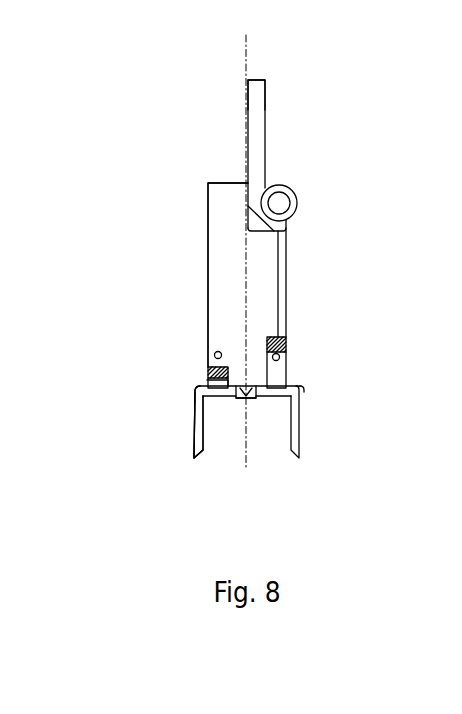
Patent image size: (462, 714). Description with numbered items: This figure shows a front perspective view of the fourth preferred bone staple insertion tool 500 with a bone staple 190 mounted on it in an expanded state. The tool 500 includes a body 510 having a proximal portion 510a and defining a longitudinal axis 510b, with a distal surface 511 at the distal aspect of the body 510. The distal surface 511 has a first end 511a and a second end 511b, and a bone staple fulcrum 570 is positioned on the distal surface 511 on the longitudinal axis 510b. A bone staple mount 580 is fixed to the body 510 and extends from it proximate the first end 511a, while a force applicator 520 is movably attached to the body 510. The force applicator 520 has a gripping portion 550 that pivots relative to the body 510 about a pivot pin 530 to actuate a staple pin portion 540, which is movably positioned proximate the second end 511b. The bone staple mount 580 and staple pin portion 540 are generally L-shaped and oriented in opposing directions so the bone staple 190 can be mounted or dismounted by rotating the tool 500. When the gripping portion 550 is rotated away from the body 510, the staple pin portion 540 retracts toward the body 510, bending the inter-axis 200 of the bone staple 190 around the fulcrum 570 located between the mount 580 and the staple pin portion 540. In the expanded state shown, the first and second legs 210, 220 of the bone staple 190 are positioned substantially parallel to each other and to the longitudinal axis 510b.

The bone staple insertion instrument or tool 500 is at (380, 118).
The body 510 is at (230, 263).
The proximal portion 510a is at (225, 200).
The longitudinal axis 510b is at (248, 83).
The distal surface 511 is at (232, 392).
The first end 511a is at (208, 363).
The second end 511b is at (260, 395).
The force applicator 520 is at (273, 153).
The pivot pin 530 is at (280, 203).
The staple pin portion 540 is at (262, 393).
The gripping portion 550 is at (263, 110).
The bone staple fulcrum 570 is at (248, 400).
The bone staple mount 580 is at (207, 383).
The bone staple 190 is at (197, 437).
The inter-axis 200 is at (208, 402).
The first leg 210 is at (203, 447).
The second leg 220 is at (296, 455).